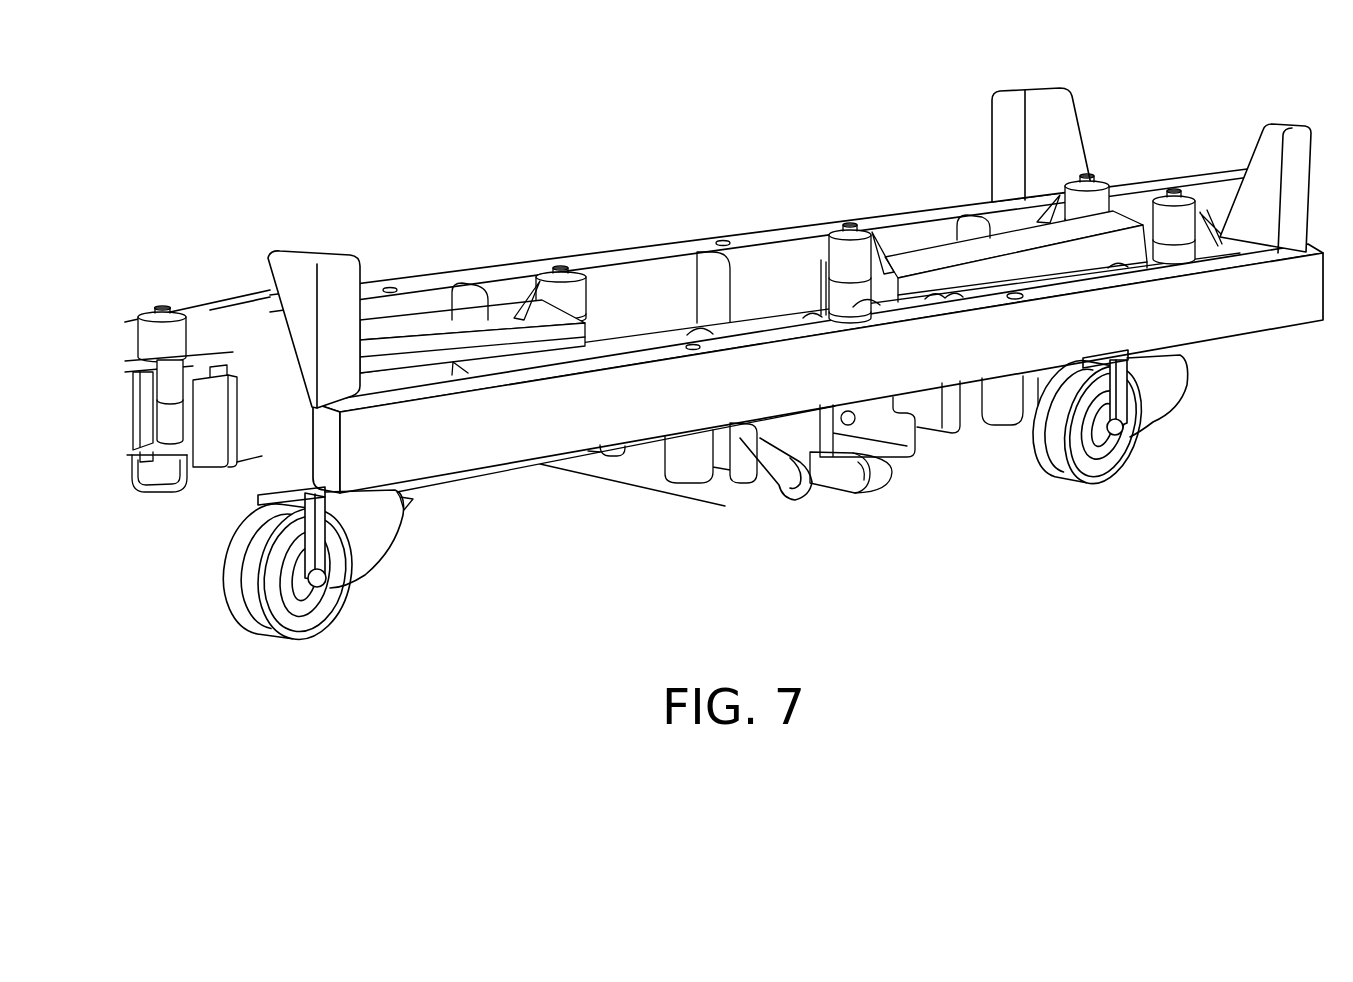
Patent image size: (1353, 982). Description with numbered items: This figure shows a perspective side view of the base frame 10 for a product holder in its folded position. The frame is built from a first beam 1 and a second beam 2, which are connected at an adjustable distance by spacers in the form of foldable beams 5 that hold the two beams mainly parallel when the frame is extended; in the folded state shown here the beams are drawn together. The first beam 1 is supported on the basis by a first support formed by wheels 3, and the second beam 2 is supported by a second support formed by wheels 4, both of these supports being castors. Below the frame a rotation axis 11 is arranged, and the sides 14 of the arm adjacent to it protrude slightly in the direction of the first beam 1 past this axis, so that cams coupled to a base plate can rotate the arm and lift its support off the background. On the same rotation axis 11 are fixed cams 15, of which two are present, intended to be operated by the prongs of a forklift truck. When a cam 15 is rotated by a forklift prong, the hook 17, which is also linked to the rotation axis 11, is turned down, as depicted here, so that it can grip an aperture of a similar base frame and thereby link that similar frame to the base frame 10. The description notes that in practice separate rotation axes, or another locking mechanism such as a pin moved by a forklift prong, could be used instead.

The base frame 10 is at (158, 245).
The first beam 1 is at (1287, 315).
The second beam 2 is at (658, 255).
The wheels 3 is at (313, 628).
The wheels 4 is at (872, 478).
The foldable beams 5 is at (415, 325).
The rotation axis 11 is at (606, 447).
The sides 14 is at (722, 470).
The cams 15 is at (580, 450).
The hook 17 is at (782, 495).